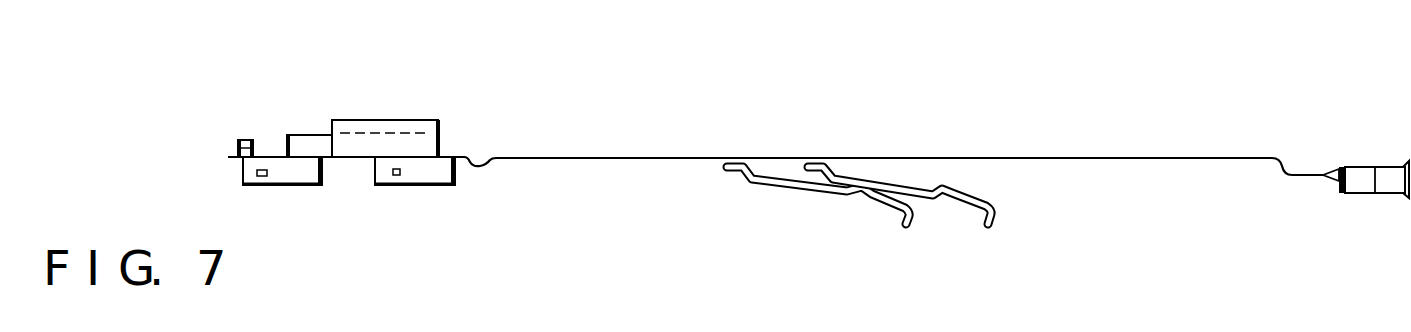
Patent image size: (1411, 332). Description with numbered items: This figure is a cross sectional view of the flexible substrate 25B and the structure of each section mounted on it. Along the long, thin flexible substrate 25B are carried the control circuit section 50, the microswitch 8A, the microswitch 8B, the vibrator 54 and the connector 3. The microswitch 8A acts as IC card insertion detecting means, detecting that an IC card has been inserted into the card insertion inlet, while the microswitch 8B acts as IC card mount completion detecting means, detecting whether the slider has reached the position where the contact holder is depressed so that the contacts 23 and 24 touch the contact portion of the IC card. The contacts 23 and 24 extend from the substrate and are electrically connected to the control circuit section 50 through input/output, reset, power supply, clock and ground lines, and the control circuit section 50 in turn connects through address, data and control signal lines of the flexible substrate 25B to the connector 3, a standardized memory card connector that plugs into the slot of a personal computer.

The flexible substrate 25B is at (1102, 157).
The control circuit section 50 is at (310, 143).
The vibrator 54 is at (414, 128).
The microswitch 8A is at (287, 173).
The microswitch 8B is at (417, 173).
The contact 23 is at (855, 198).
The contact 24 is at (948, 198).
The connector 3 is at (1360, 178).